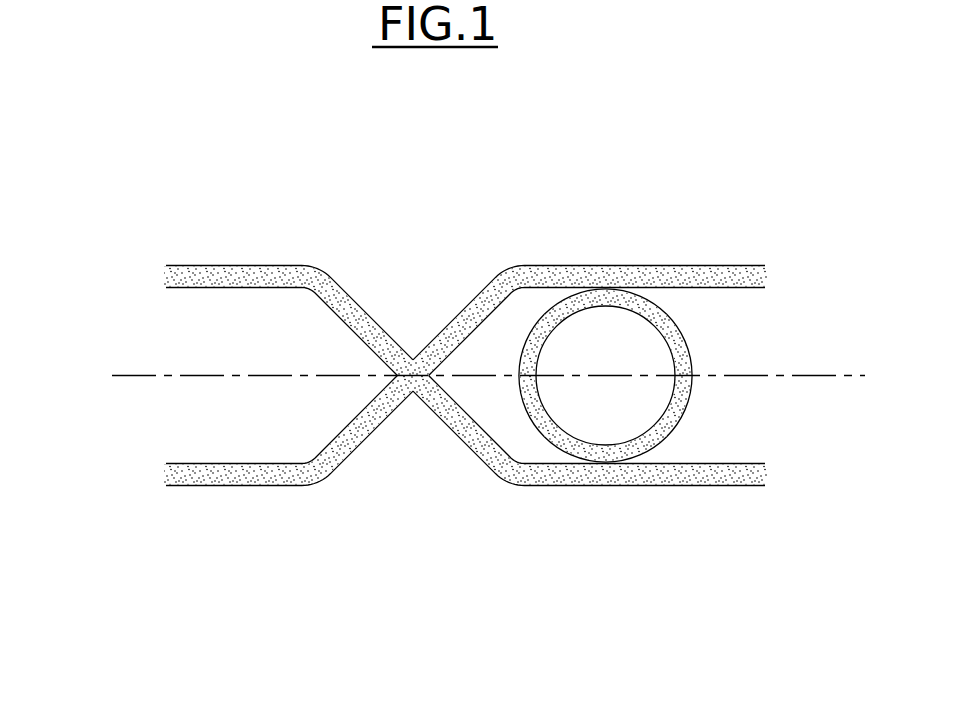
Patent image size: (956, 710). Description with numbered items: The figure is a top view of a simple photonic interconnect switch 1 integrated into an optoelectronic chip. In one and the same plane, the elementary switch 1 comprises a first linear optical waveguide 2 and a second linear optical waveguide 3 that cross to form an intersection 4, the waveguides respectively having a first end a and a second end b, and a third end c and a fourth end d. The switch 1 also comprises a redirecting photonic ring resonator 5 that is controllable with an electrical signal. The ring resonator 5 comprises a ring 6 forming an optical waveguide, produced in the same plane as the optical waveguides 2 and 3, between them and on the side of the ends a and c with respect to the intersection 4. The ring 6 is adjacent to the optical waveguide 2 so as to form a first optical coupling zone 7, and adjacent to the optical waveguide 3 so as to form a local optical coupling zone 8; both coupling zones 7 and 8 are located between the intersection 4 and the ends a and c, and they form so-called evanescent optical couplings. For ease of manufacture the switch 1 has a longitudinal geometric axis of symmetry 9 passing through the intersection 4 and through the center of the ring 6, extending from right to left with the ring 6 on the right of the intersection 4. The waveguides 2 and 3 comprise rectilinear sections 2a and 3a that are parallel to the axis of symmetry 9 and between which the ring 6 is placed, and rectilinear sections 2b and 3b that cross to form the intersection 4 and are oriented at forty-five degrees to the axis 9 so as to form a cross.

The simple photonic interconnect switch 1 is at (231, 203).
The first linear optical waveguide 2 is at (466, 293).
The rectilinear section of first optical waveguide 2a is at (650, 270).
The rectilinear section of first optical waveguide 2b is at (352, 452).
The second linear optical waveguide 3 is at (466, 459).
The rectilinear section of second optical waveguide 3a is at (648, 484).
The rectilinear section of second optical waveguide 3b is at (352, 300).
The intersection 4 is at (412, 358).
The redirecting photonic ring resonator 5 is at (701, 357).
The ring 6 is at (688, 402).
The first optical coupling zone 7 is at (622, 289).
The local optical coupling zone 8 is at (600, 462).
The longitudinal geometric axis of symmetry 9 is at (842, 371).
The first end a is at (766, 272).
The second end b is at (166, 471).
The third end c is at (766, 477).
The fourth end d is at (166, 273).